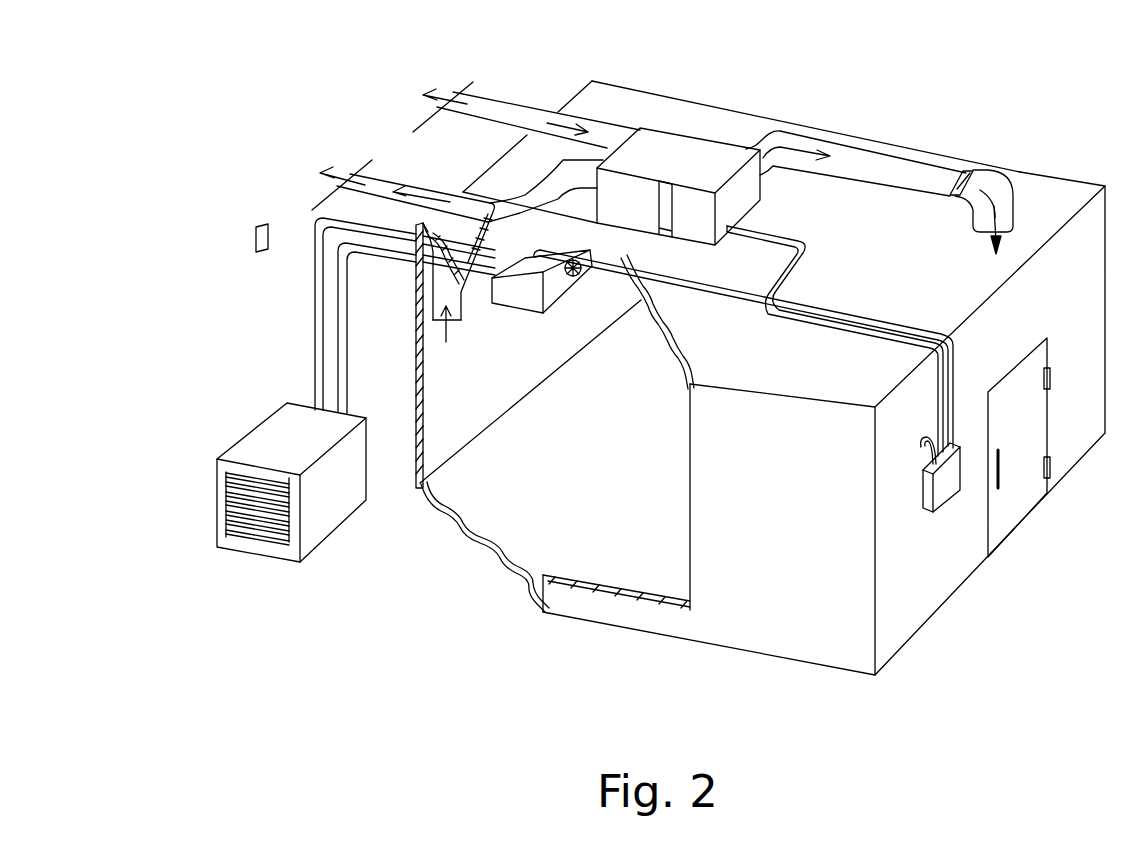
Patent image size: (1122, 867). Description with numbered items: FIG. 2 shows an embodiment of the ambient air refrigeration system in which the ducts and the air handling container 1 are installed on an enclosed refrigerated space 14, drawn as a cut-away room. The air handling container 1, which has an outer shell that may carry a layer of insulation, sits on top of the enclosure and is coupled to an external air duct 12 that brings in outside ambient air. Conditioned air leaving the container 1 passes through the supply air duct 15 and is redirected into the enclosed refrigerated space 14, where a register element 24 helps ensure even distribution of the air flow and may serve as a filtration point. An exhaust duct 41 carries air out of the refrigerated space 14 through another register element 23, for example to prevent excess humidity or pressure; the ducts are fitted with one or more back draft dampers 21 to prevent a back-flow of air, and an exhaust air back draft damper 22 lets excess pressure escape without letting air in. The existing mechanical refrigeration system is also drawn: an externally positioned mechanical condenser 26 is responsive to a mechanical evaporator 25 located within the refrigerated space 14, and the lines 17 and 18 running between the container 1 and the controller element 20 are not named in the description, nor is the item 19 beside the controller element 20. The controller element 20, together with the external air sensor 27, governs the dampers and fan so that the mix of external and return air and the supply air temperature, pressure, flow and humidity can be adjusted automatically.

The air handling container 1 is at (680, 155).
The external air duct 12 is at (518, 102).
The enclosed refrigerated space 14 is at (757, 114).
The supply air duct 15 is at (773, 168).
The refrigerant pipe 17 is at (810, 258).
The refrigerant pipe 18 is at (834, 325).
The sensor 19 is at (927, 453).
The controller element 20 is at (948, 505).
The back draft damper 21 is at (502, 242).
The exhaust air back draft damper 22 is at (349, 173).
The register element 23 is at (463, 312).
The register element 24 is at (1020, 207).
The mechanical evaporator 25 is at (510, 315).
The mechanical condenser 26 is at (350, 520).
The external air sensor 27 is at (255, 242).
The exhaust duct 41 is at (407, 183).